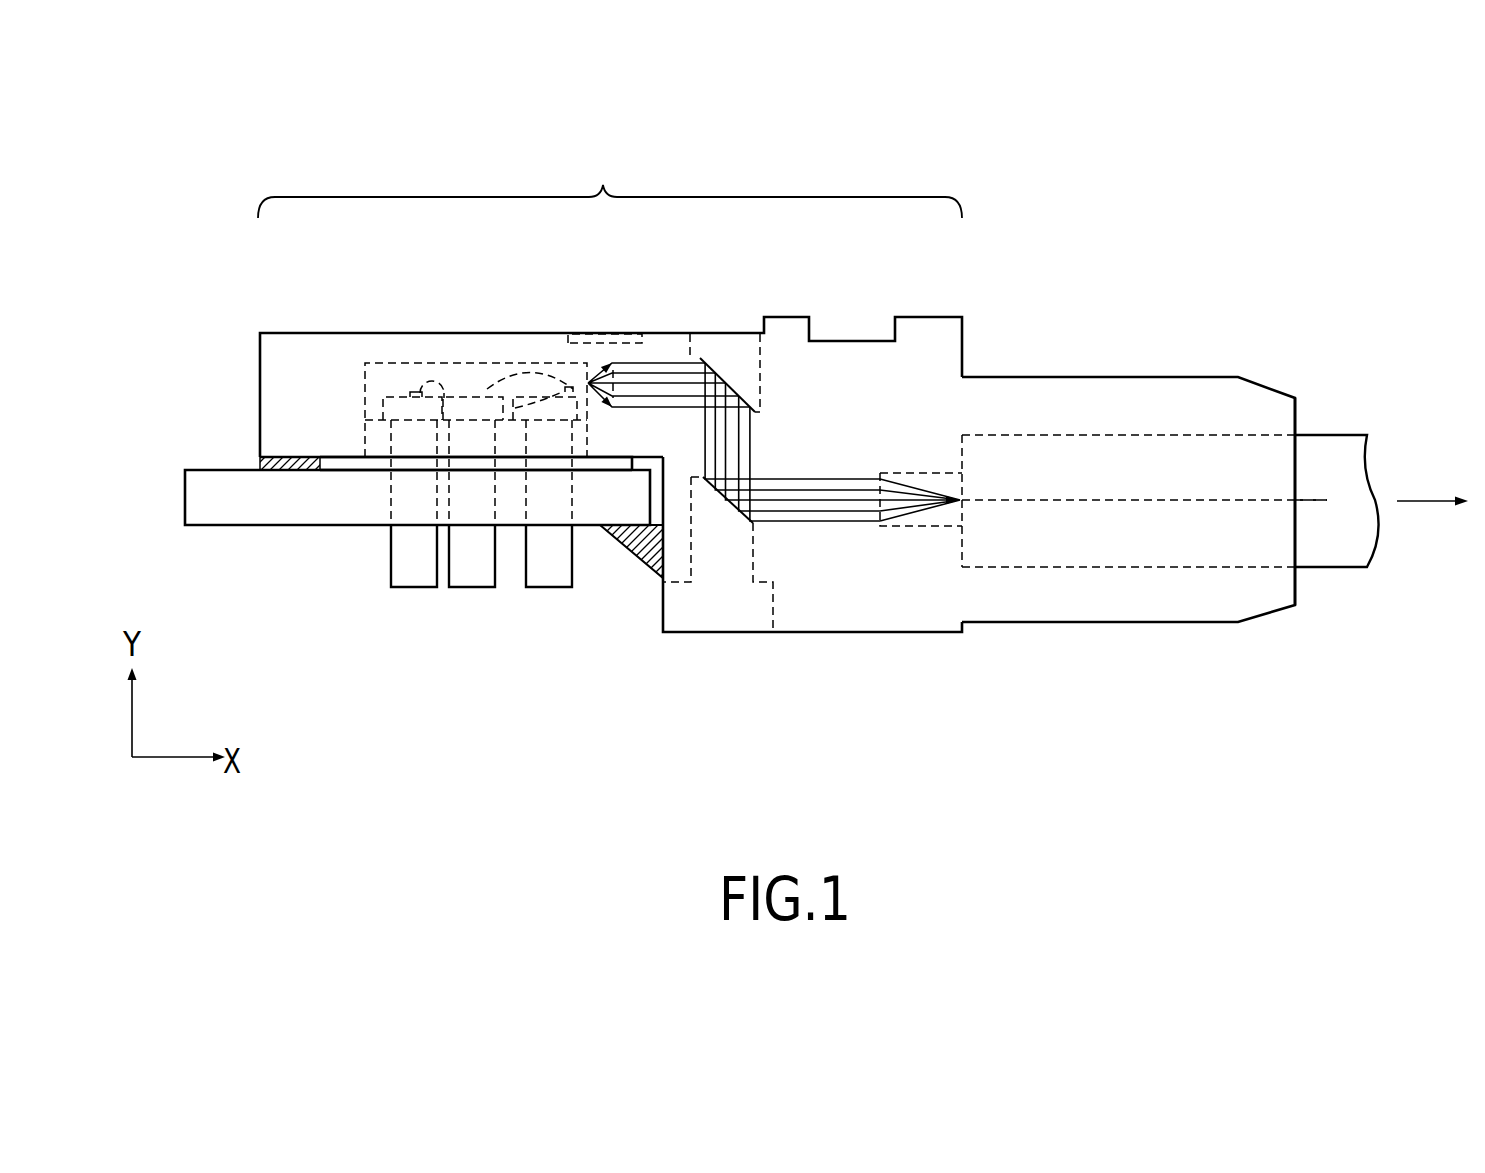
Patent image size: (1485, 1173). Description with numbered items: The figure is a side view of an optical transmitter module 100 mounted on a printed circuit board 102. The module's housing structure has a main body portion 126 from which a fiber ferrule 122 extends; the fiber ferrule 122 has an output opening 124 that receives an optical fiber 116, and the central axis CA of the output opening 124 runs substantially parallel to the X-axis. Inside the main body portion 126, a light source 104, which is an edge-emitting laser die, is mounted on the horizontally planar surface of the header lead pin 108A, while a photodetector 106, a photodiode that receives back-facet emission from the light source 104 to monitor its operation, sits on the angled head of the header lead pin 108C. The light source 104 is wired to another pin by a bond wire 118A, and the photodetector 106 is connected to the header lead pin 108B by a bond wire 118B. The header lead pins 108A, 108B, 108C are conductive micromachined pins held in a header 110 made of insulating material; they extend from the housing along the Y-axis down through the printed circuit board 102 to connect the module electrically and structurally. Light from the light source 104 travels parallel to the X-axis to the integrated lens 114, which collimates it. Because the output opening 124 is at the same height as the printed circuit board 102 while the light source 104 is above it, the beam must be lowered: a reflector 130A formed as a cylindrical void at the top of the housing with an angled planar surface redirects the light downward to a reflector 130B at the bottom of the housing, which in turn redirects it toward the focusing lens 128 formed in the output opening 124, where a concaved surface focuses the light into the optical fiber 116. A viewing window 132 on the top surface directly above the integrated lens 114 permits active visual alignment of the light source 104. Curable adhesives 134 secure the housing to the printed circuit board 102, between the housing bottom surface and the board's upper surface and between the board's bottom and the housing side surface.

The optical transmitter module 100 is at (1258, 790).
The printed circuit board 102 is at (195, 468).
The light source 104 is at (556, 362).
The photodetector 106 is at (413, 396).
The header lead pin 108A is at (547, 588).
The header lead pin 108B is at (472, 588).
The header lead pin 108C is at (413, 588).
The header 110 is at (347, 455).
The integrated lens 114 is at (600, 383).
The optical fiber 116 is at (1350, 436).
The bond wire 118A is at (492, 382).
The bond wire 118B is at (429, 378).
The fiber ferrule 122 is at (962, 218).
The output opening 124 is at (1303, 431).
The main body portion 126 is at (610, 386).
The focusing lens 128 is at (913, 527).
The reflector 130A is at (733, 352).
The reflector 130B is at (722, 565).
The viewing window 132 is at (598, 334).
The curable adhesives 134 is at (258, 466).
The central axis CA is at (1315, 505).